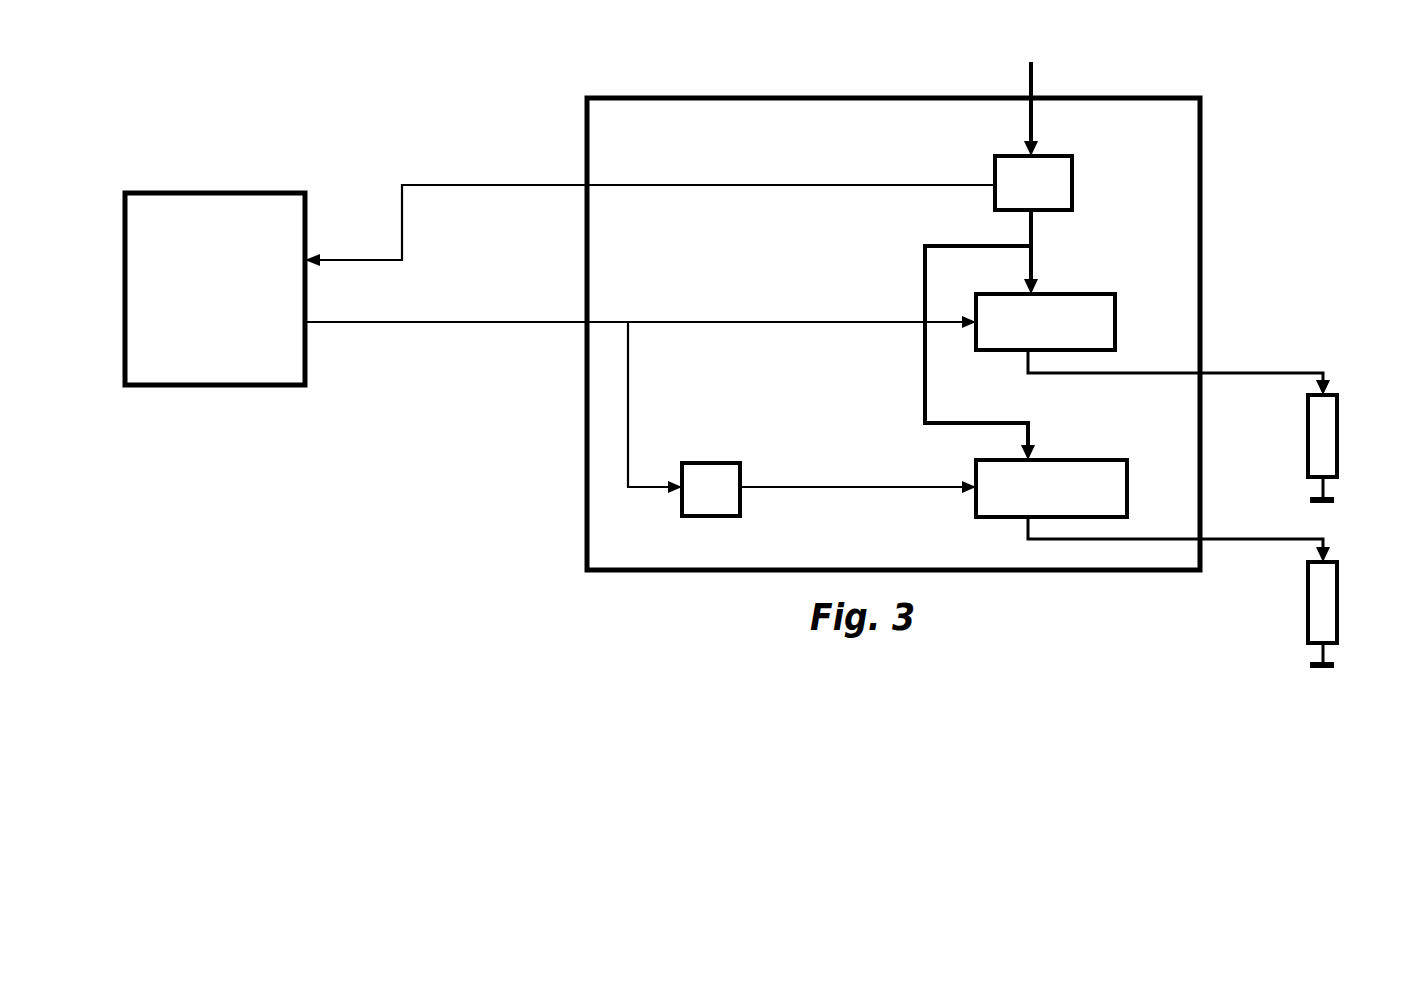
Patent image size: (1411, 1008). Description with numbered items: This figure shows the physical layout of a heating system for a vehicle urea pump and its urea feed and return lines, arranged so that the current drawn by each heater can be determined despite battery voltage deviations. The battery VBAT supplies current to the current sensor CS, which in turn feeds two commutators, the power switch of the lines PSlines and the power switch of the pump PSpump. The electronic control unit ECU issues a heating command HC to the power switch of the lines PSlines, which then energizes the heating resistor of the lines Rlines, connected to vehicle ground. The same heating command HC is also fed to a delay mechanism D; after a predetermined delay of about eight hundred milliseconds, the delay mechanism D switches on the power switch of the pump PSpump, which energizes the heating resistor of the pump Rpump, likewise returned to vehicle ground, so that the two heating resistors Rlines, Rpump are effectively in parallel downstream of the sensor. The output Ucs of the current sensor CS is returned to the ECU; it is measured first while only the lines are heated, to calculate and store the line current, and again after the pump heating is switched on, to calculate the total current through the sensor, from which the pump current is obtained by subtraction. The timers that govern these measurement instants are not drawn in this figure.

The electronic control unit ECU is at (215, 289).
The current sensor CS is at (998, 308).
The output of the current sensor Ucs is at (650, 225).
The heating command HC is at (640, 394).
The battery VBAT is at (1022, 92).
The power switch of the lines PSlines is at (1153, 344).
The power switch of the pump PSpump is at (1153, 511).
The delay mechanism D is at (829, 489).
The heating resistor of the lines Rlines is at (1359, 456).
The heating resistor of the pump Rpump is at (1359, 618).